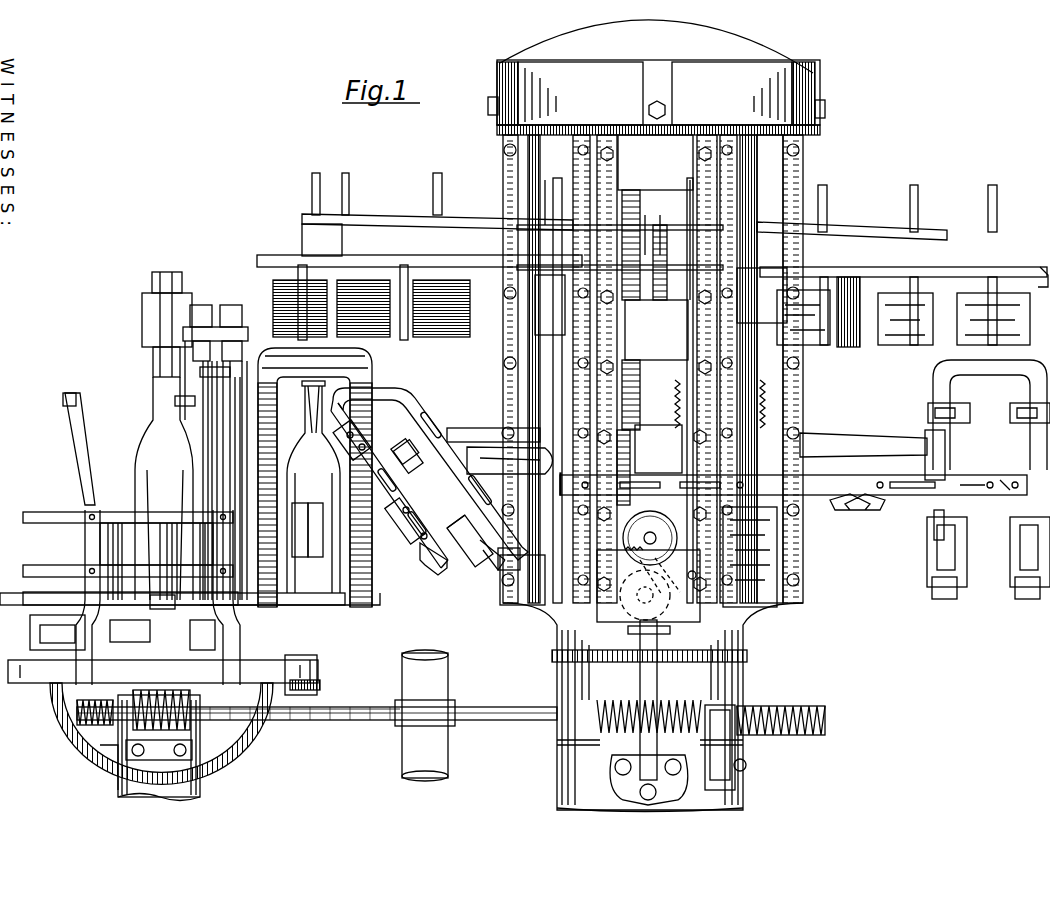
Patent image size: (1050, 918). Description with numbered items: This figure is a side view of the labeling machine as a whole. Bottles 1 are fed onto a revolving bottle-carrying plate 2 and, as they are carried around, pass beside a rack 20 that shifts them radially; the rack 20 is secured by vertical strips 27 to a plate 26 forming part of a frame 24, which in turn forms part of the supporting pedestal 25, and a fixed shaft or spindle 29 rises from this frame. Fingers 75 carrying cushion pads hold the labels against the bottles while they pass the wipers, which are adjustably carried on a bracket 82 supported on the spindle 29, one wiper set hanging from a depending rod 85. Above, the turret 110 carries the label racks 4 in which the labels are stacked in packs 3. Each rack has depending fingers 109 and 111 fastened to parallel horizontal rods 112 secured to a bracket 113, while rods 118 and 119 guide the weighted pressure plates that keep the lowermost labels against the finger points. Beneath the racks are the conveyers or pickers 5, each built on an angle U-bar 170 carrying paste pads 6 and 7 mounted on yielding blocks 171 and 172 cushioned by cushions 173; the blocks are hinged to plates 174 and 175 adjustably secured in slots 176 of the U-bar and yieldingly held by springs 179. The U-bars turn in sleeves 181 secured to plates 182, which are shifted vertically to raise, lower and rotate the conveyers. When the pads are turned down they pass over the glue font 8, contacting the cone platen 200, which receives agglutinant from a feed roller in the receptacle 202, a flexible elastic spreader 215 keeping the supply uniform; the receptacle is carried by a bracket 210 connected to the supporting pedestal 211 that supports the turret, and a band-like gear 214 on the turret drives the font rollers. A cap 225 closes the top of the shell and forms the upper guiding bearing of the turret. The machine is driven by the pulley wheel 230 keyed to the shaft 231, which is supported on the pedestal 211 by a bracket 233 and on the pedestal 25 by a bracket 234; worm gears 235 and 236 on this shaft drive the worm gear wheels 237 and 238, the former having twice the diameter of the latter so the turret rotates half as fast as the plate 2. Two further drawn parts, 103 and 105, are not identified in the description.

The bottles 1 is at (150, 452).
The bottle-carrying plate 2 is at (345, 600).
The packs of labels 3 is at (273, 300).
The label racks 4 is at (303, 240).
The label conveyers 5 is at (429, 474).
The glue pads 6 is at (972, 413).
The glue pads 7 is at (1010, 545).
The font 8 is at (648, 586).
The rack 20 is at (165, 512).
The frame 24 is at (170, 733).
The supporting pedestal 25 is at (202, 783).
The plate 26 is at (306, 671).
The vertical strips 27 is at (85, 555).
The fixed shaft or spindle 29 is at (165, 274).
The fingers 75 is at (92, 430).
The bracket 82 is at (190, 318).
The depending rod 85 is at (196, 432).
The central housing 103 is at (656, 330).
The yoke 105 is at (990, 409).
The depending fingers 109 is at (403, 340).
The turret 110 is at (796, 369).
The depending fingers 111 is at (312, 326).
The parallel horizontal rods 112 is at (257, 262).
The bracket 113 is at (305, 235).
The rod 118 is at (349, 190).
The rod 119 is at (312, 192).
The angle U-bar 170 is at (680, 478).
The cushioned block 171 is at (425, 455).
The cushioned block 172 is at (476, 520).
The cushions 173 is at (487, 570).
The plate 174 is at (450, 426).
The plate 175 is at (1000, 485).
The slots 176 is at (430, 420).
The springs 179 is at (930, 548).
The sleeves 181 is at (866, 440).
The plates 182 is at (614, 445).
The cone platen 200 is at (660, 525).
The receptacle 202 is at (660, 598).
The bracket 210 is at (657, 690).
The supporting pedestal 211 is at (557, 752).
The gear 214 is at (748, 656).
The flexible elastic spreader 215 is at (668, 575).
The cap 225 is at (775, 62).
The pulley wheel 230 is at (452, 676).
The shaft 231 is at (340, 722).
The bracket 233 is at (737, 748).
The bracket 234 is at (100, 750).
The worm gear 235 is at (622, 700).
The worm gear 236 is at (170, 662).
The worm gear wheel 237 is at (828, 720).
The worm gear wheel 238 is at (75, 715).